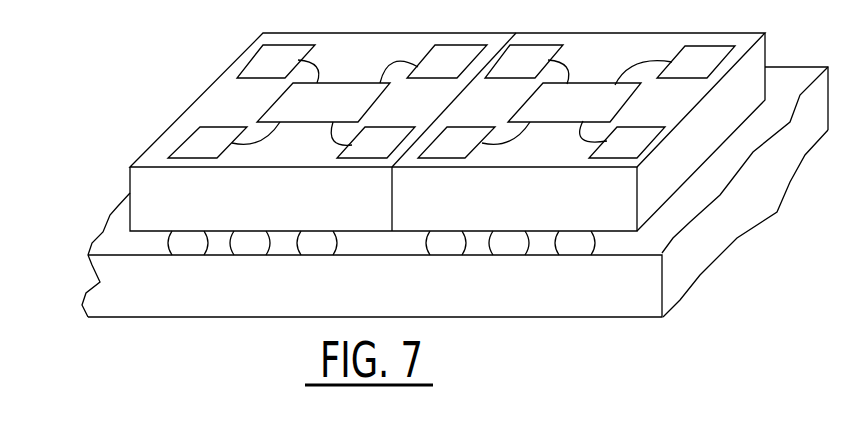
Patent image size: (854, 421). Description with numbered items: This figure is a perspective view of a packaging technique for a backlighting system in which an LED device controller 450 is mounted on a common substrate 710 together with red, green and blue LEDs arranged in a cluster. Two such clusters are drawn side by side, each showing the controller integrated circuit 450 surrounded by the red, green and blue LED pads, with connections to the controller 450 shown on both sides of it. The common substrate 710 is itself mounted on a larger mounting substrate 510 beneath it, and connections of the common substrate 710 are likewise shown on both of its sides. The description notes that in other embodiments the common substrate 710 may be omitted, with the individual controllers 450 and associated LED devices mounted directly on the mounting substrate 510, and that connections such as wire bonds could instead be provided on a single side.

The common substrate 710 is at (225, 92).
The LED device controller 450 is at (345, 115).
The mounting substrate 510 is at (120, 285).